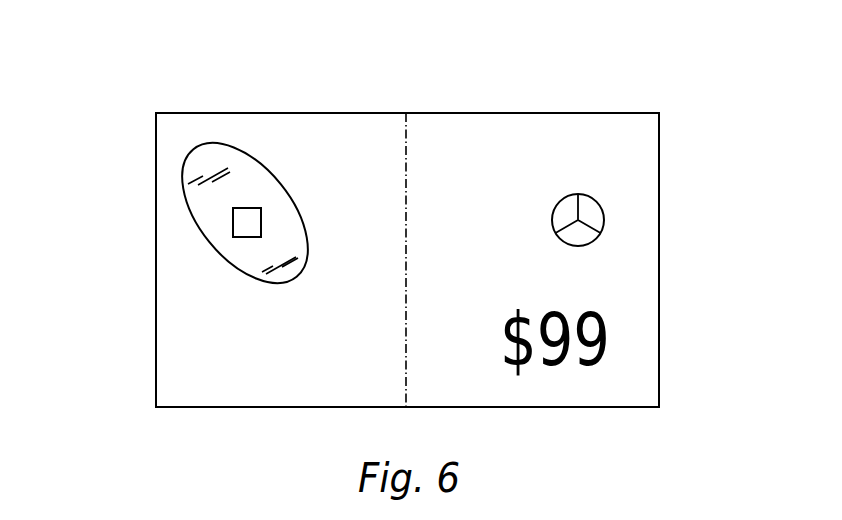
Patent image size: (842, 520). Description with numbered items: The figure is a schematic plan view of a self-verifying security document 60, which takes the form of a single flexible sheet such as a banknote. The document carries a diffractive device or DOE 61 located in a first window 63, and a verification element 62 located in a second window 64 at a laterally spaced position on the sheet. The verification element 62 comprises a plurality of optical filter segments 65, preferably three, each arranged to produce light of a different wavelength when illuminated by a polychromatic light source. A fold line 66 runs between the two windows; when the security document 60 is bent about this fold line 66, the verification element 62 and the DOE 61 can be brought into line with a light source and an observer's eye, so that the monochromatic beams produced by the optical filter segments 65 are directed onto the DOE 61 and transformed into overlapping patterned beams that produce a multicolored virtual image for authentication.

The self-verifying security document 60 is at (198, 108).
The diffractive device (DOE) 61 is at (233, 224).
The verification element 62 is at (590, 245).
The first window 63 is at (183, 174).
The second window 64 is at (587, 137).
The optical filter segments 65 is at (592, 213).
The fold line 66 is at (407, 195).